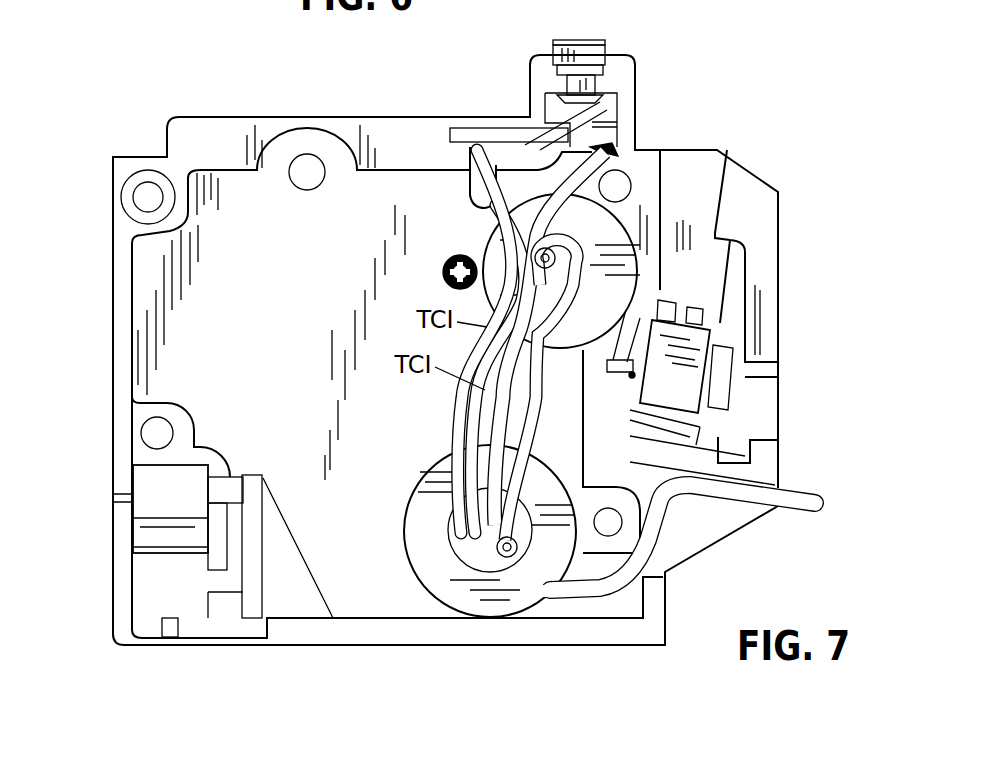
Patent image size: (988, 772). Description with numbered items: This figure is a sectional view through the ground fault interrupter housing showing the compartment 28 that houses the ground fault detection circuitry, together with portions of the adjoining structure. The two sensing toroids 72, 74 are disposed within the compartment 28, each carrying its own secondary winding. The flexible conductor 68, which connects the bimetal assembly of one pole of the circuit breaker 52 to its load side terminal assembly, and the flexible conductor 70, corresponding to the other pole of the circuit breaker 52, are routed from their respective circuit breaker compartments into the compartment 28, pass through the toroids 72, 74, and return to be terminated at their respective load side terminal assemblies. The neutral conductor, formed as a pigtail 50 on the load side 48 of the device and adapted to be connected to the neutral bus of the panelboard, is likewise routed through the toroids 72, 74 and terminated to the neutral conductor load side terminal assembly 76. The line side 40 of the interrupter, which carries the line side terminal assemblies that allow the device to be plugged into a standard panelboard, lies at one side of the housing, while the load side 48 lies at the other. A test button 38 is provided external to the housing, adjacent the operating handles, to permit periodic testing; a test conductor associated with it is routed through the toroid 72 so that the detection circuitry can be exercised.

The compartment 28 is at (200, 300).
The test button 38 is at (600, 42).
The line side 40 is at (98, 496).
The load side 48 is at (790, 388).
The neutral conductor pigtail 50 is at (553, 250).
The circuit breaker 52 is at (682, 124).
The flexible conductor 68 is at (447, 528).
The flexible conductor 70 is at (455, 462).
The toroid 72 is at (533, 578).
The toroid 74 is at (613, 247).
The neutral conductor load side terminal assembly 76 is at (700, 333).